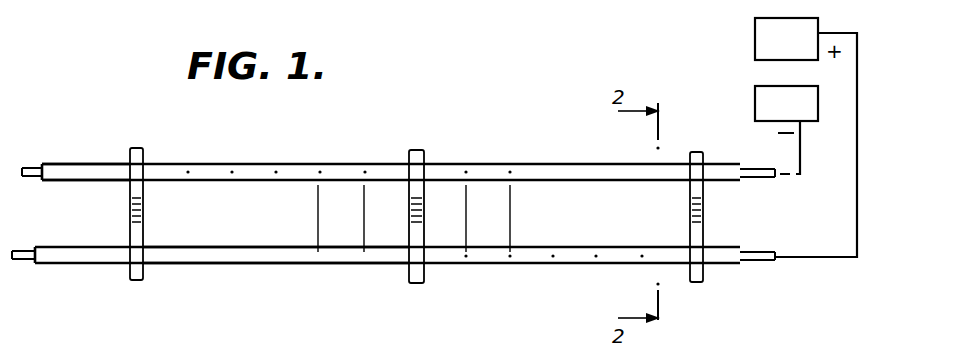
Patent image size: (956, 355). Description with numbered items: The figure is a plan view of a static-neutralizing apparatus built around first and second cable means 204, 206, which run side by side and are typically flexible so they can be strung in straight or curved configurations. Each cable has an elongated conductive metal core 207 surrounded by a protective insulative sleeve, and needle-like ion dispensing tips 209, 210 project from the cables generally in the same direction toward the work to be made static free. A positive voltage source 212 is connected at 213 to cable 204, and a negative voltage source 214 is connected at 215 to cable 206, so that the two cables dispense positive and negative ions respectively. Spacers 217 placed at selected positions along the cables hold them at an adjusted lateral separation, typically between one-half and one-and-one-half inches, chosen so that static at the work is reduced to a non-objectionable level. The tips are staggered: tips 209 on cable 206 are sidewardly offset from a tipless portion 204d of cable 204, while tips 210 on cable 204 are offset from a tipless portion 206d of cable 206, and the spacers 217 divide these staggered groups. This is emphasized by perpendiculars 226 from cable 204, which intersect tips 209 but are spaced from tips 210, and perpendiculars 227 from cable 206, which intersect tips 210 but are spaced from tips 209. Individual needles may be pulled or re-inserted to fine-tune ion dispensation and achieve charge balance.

The first cable means 204 is at (335, 272).
The portion of cable 204 containing no tips 204d is at (188, 265).
The second cable means 206 is at (354, 158).
The portion of cable 206 containing no tips 206d is at (76, 162).
The conductive metal core 207 is at (750, 180).
The ion dispensing tips 209 is at (230, 168).
The ion dispensing tips 210 is at (92, 252).
The positive voltage source 212 is at (755, 33).
The connection of positive voltage source to cable 204 213 is at (830, 259).
The negative voltage source 214 is at (755, 95).
The connection of negative voltage source to cable 206 215 is at (800, 150).
The spacers 217 is at (136, 281).
The perpendiculars from cable 204 226 is at (364, 222).
The perpendiculars from cable 206 227 is at (510, 228).